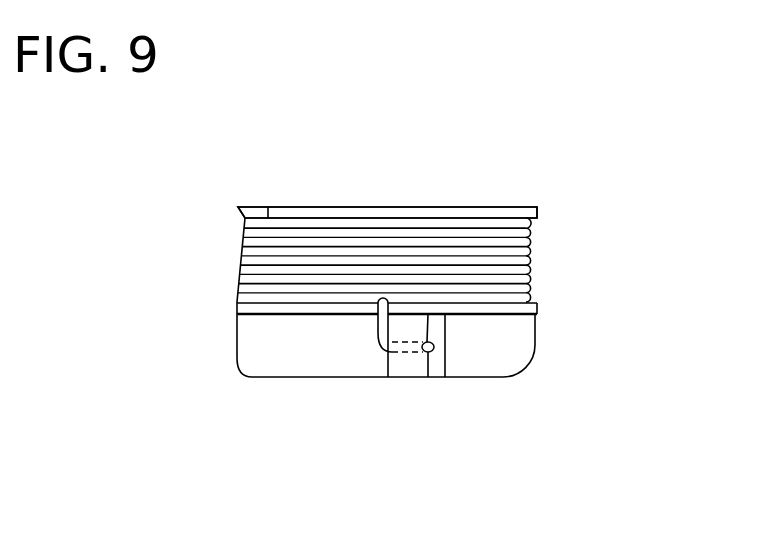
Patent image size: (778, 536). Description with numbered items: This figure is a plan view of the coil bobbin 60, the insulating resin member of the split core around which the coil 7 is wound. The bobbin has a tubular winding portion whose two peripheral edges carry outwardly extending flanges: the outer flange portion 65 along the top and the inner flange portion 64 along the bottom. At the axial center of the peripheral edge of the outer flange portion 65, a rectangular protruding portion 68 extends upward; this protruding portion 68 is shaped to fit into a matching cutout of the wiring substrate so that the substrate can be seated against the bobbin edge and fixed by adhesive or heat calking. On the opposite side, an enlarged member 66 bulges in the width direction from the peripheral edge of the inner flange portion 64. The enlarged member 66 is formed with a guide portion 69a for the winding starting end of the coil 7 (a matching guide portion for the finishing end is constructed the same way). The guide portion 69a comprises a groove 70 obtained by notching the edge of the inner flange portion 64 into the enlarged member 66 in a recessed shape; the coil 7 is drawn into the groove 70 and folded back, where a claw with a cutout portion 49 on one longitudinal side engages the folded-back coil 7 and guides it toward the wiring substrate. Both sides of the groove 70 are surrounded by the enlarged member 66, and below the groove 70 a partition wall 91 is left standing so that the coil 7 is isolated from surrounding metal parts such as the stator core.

The coil bobbin 60 is at (529, 201).
The protruding portion 68 is at (255, 212).
The outer flange portion 65 is at (425, 213).
The inner flange portion 64 is at (530, 309).
The enlarged member 66 is at (275, 392).
The groove 70 is at (382, 367).
The partition wall 91 is at (385, 366).
The coil 7 is at (432, 344).
The cutout portion 49 is at (433, 352).
The guide portion of the winding starting end 69a is at (417, 391).